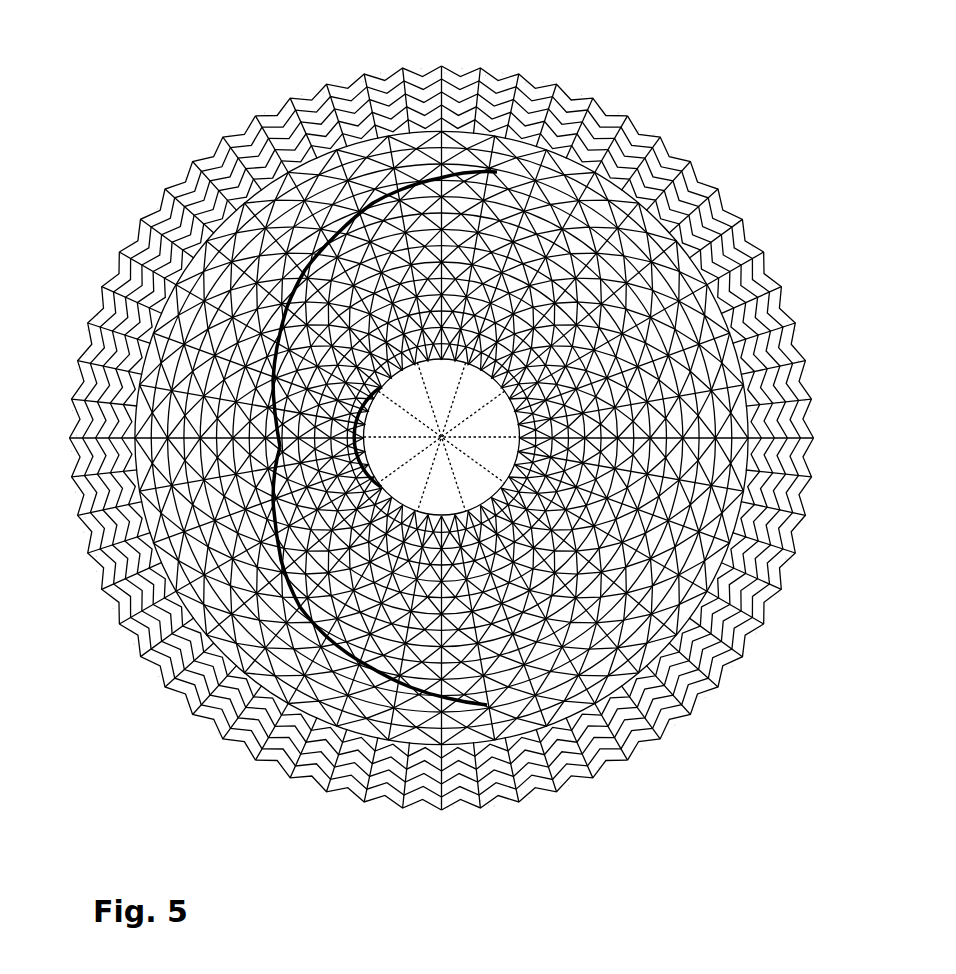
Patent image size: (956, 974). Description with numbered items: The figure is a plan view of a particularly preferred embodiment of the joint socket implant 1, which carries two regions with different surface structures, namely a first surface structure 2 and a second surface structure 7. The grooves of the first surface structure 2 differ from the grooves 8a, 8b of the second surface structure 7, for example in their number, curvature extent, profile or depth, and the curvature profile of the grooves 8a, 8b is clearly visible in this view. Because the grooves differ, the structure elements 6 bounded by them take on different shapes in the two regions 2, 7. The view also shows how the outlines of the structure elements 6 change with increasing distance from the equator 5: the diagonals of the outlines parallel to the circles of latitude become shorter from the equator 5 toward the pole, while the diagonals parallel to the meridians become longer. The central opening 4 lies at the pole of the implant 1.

The joint socket implant 1 is at (441, 438).
The first surface structure 2 is at (762, 314).
The central opening 4 is at (425, 408).
The equator 5 is at (759, 650).
The structure elements 6 is at (452, 772).
The second surface structure 7 is at (158, 149).
The groove of the second surface structure 8a is at (300, 612).
The groove of the second surface structure 8b is at (300, 235).